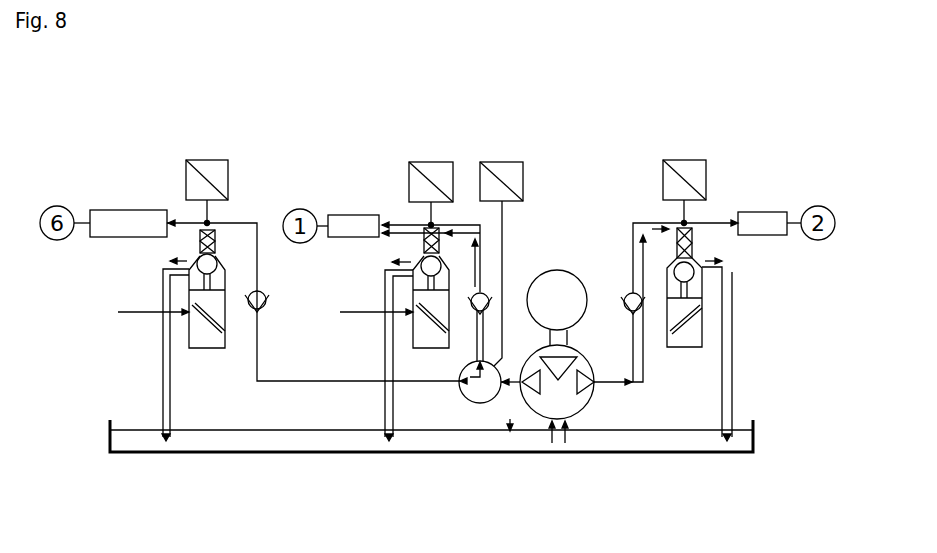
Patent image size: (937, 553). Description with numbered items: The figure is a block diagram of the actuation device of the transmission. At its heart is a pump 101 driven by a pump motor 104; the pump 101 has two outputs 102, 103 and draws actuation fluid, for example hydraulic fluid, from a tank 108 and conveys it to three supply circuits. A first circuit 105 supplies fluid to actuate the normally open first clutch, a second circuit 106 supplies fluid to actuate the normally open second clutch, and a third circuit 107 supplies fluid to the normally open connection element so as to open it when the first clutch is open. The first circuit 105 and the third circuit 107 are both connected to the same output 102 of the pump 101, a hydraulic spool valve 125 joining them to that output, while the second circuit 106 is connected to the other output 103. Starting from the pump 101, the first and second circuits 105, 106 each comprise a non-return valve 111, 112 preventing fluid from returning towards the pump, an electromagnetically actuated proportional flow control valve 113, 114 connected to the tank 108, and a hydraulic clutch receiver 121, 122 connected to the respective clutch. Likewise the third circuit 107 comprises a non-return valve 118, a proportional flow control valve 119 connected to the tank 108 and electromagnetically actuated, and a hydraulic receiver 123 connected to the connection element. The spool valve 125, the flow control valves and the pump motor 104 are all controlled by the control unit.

The pump 101 is at (557, 392).
The pump output 102 is at (518, 387).
The pump output 103 is at (597, 387).
The pump motor 104 is at (557, 305).
The first circuit 105 is at (465, 222).
The second circuit 106 is at (632, 262).
The third circuit 107 is at (258, 250).
The tank 108 is at (253, 442).
The non-return valve 111 is at (490, 298).
The non-return valve 112 is at (636, 313).
The proportional flow control valve 113 is at (421, 262).
The proportional flow control valve 114 is at (697, 262).
The non-return valve 118 is at (261, 310).
The proportional flow control valve 119 is at (190, 287).
The hydraulic clutch receiver 121 is at (350, 225).
The hydraulic clutch receiver 122 is at (765, 225).
The hydraulic receiver 123 is at (118, 226).
The hydraulic spool valve 125 is at (462, 392).